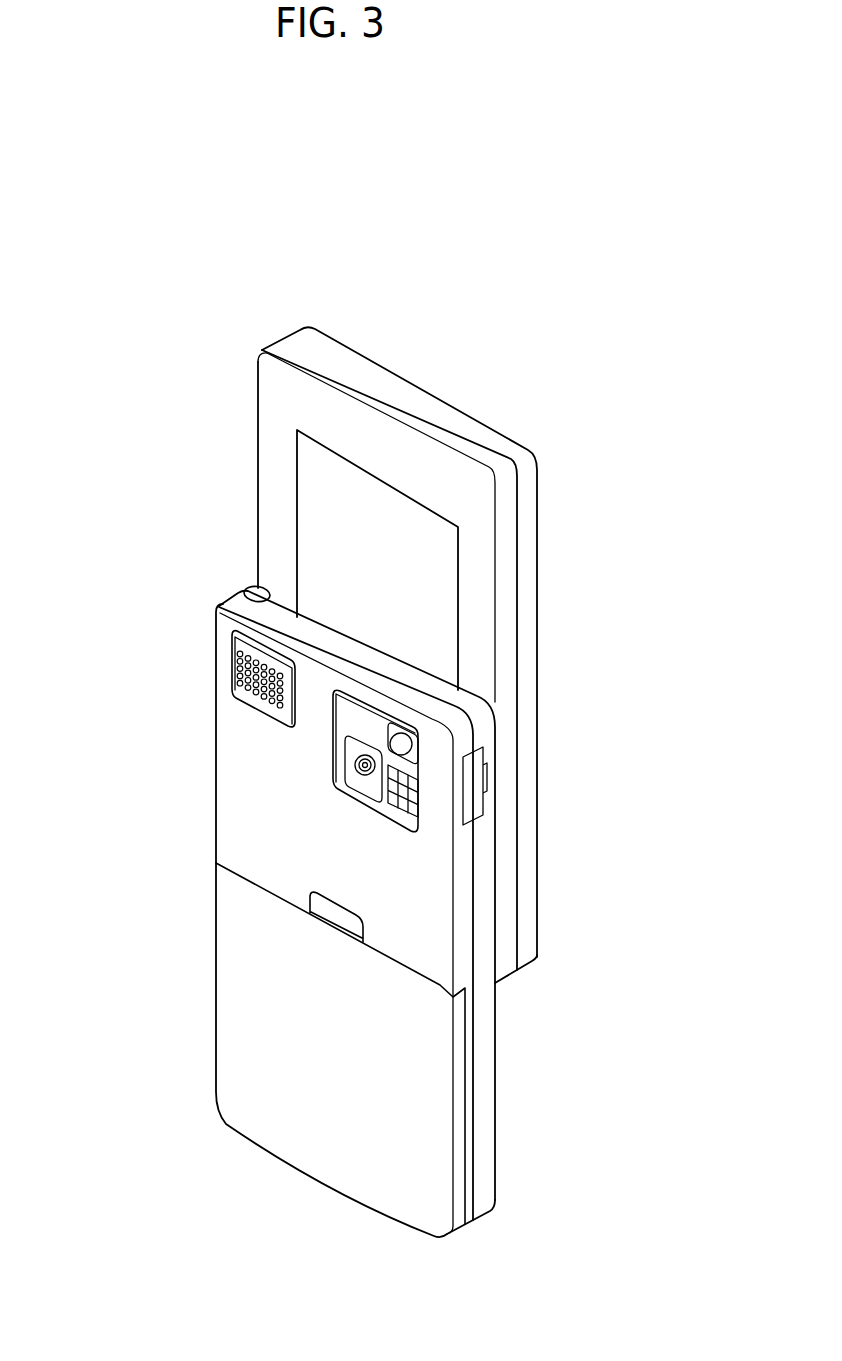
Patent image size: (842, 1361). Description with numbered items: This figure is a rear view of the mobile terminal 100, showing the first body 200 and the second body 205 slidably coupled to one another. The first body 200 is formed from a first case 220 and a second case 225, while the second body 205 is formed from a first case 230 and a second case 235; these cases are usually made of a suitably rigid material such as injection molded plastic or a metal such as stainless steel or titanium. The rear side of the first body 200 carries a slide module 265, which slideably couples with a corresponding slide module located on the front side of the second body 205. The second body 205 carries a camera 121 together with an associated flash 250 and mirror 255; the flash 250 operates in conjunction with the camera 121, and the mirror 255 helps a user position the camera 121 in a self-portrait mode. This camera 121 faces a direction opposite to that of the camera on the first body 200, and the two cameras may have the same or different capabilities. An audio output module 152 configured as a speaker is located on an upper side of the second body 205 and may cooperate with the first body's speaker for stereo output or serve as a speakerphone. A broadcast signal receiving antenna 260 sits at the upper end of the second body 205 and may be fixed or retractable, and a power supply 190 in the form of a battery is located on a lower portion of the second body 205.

The mobile terminal 100 is at (516, 357).
The first body 200 is at (224, 466).
The second body 205 is at (197, 775).
The first case 220 is at (302, 337).
The second case 225 is at (287, 350).
The first case 230 is at (487, 1012).
The second case 235 is at (462, 953).
The slide module 265 is at (294, 540).
The broadcast signal receiving antenna 260 is at (247, 592).
The audio output module 152 is at (240, 670).
The flash 250 is at (400, 797).
The mirror 255 is at (402, 745).
The camera 121 is at (365, 765).
The power supply 190 is at (232, 951).